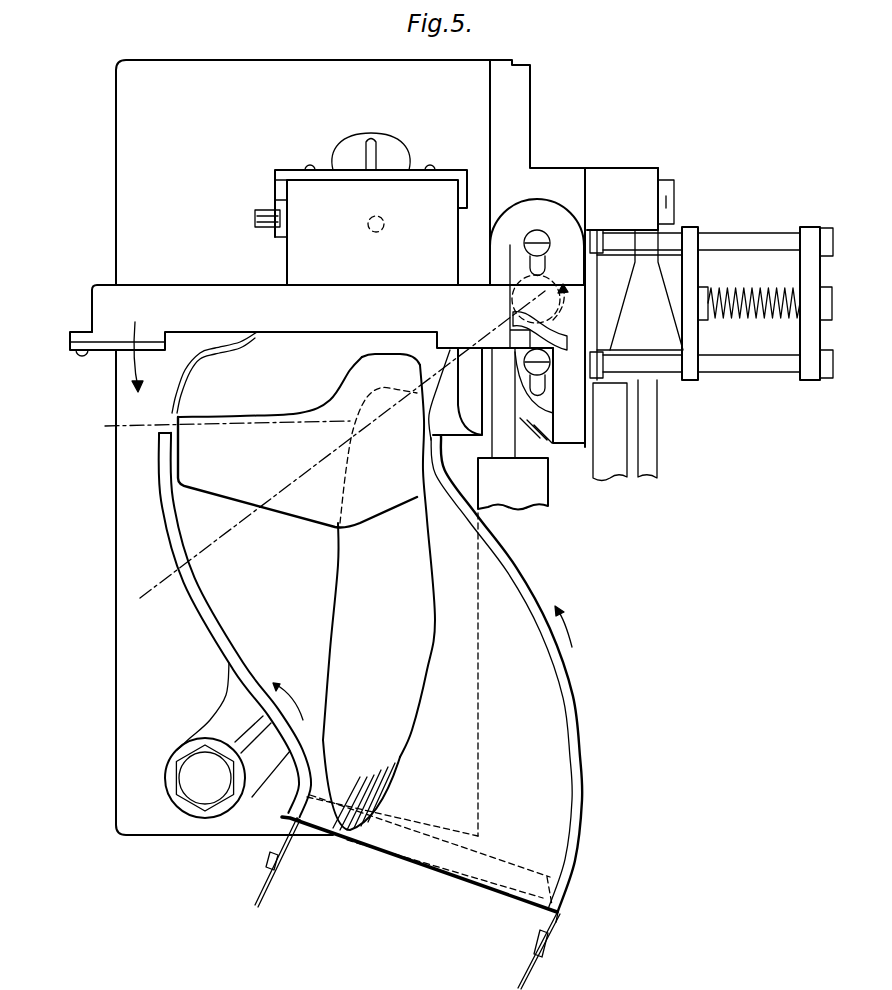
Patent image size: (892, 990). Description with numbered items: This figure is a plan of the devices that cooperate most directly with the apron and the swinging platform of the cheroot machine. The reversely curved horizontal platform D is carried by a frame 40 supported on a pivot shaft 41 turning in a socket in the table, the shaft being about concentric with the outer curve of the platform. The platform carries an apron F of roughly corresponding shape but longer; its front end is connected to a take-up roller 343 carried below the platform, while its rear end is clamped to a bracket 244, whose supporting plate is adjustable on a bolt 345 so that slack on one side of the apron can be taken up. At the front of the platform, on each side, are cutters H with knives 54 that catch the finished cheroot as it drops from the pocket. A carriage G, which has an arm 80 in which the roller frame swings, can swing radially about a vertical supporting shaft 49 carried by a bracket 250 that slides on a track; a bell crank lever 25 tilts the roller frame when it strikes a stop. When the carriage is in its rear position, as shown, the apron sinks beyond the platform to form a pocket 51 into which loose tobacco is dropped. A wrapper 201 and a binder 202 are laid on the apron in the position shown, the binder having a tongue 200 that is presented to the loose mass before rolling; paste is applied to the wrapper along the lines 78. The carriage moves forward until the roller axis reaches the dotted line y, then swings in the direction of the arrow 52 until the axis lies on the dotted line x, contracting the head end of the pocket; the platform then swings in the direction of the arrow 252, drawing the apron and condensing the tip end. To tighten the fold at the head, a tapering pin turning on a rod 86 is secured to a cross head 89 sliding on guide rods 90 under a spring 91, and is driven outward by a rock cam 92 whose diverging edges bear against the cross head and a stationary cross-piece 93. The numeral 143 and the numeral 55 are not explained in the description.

The bracket 244 is at (275, 183).
The bolt 345 is at (386, 216).
The arrow 252 is at (540, 238).
The bracket 250 is at (551, 267).
The stationary cross-piece 93 is at (608, 267).
The cross head 89 is at (685, 282).
The guide rods 90 is at (771, 247).
The rock cam 92 is at (640, 290).
The spring 91 is at (733, 318).
The rod 86 is at (744, 312).
The lower member 143 is at (655, 437).
The vertical supporting shaft 49 is at (510, 295).
The bell crank lever 25 is at (548, 317).
The arrow 52 is at (356, 338).
The arm 80 is at (327, 320).
The pocket 51 is at (238, 372).
The tongue 200 is at (380, 438).
The binder 202 is at (297, 442).
The wrapper 201 is at (392, 600).
The frame 40 is at (222, 705).
The pivot shaft 41 is at (190, 795).
The paste lines 78 is at (352, 806).
The take-up roller 343 is at (448, 880).
The knives 54 is at (547, 921).
The links 55 is at (270, 888).
The carriage G is at (606, 305).
The apron F is at (550, 692).
The platform D is at (576, 765).
The cutters H is at (398, 902).
The dotted line x is at (333, 456).
The dotted line y is at (217, 428).